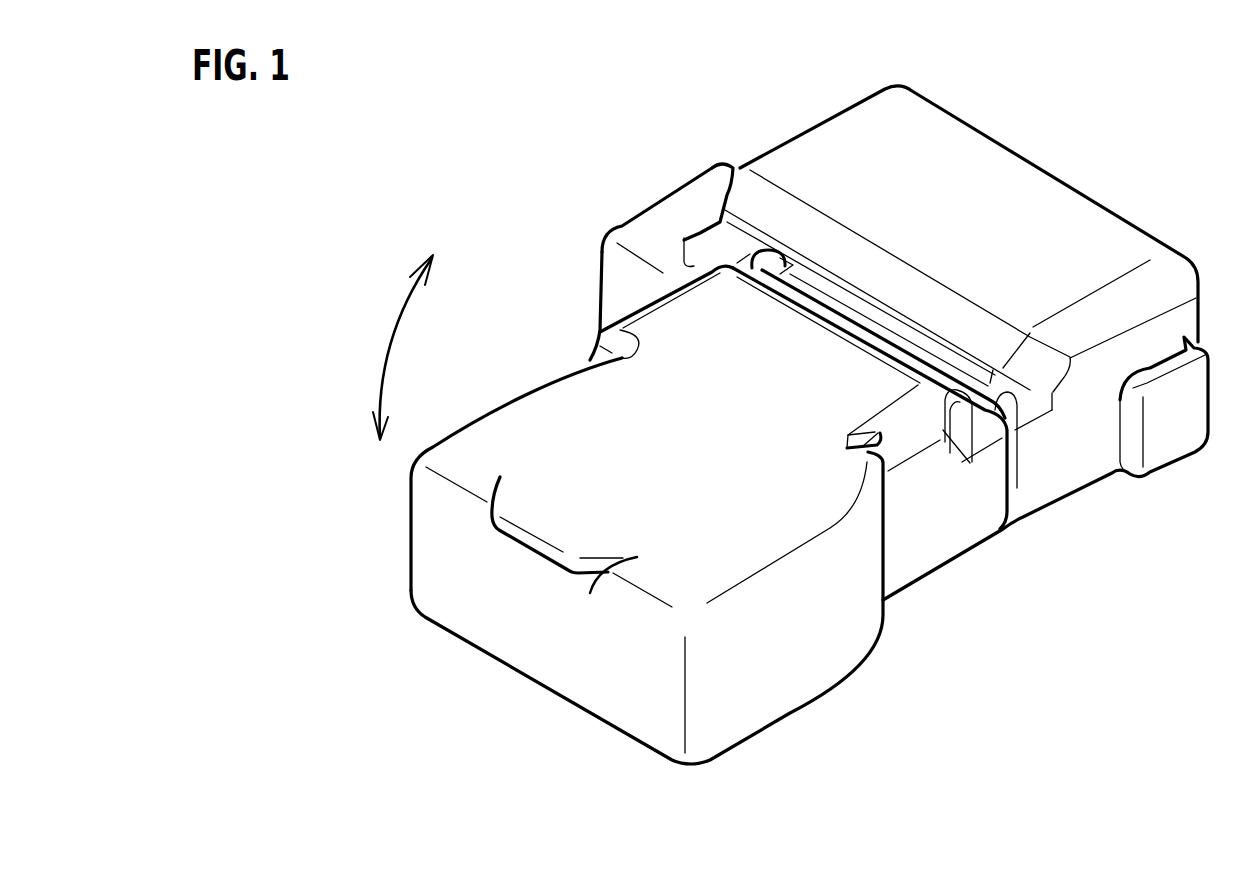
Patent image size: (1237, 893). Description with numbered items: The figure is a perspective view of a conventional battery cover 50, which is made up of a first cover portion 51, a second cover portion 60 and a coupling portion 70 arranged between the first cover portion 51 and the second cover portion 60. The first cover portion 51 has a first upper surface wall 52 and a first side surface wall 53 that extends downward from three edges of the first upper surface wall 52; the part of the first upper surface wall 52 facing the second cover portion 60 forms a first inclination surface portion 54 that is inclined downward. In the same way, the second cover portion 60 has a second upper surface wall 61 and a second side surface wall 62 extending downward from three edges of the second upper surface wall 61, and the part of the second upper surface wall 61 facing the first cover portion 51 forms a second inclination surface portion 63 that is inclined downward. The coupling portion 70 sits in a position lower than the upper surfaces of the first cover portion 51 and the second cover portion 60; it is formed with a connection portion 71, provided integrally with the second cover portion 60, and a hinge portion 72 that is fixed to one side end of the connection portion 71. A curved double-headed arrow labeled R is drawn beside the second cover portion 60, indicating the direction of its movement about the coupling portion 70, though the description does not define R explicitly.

The battery cover 50 is at (506, 162).
The first cover portion 51 is at (1064, 186).
The first upper surface wall 52 is at (1088, 252).
The first side surface wall 53 is at (1087, 450).
The first inclination surface portion 54 is at (900, 285).
The second cover portion 60 is at (493, 402).
The second upper surface wall 61 is at (553, 517).
The second side surface wall 62 is at (772, 663).
The second inclination surface portion 63 is at (966, 464).
The coupling portion 70 is at (870, 58).
The connection portion 71 is at (750, 242).
The hinge portion 72 is at (828, 300).
The rotation direction R is at (392, 342).